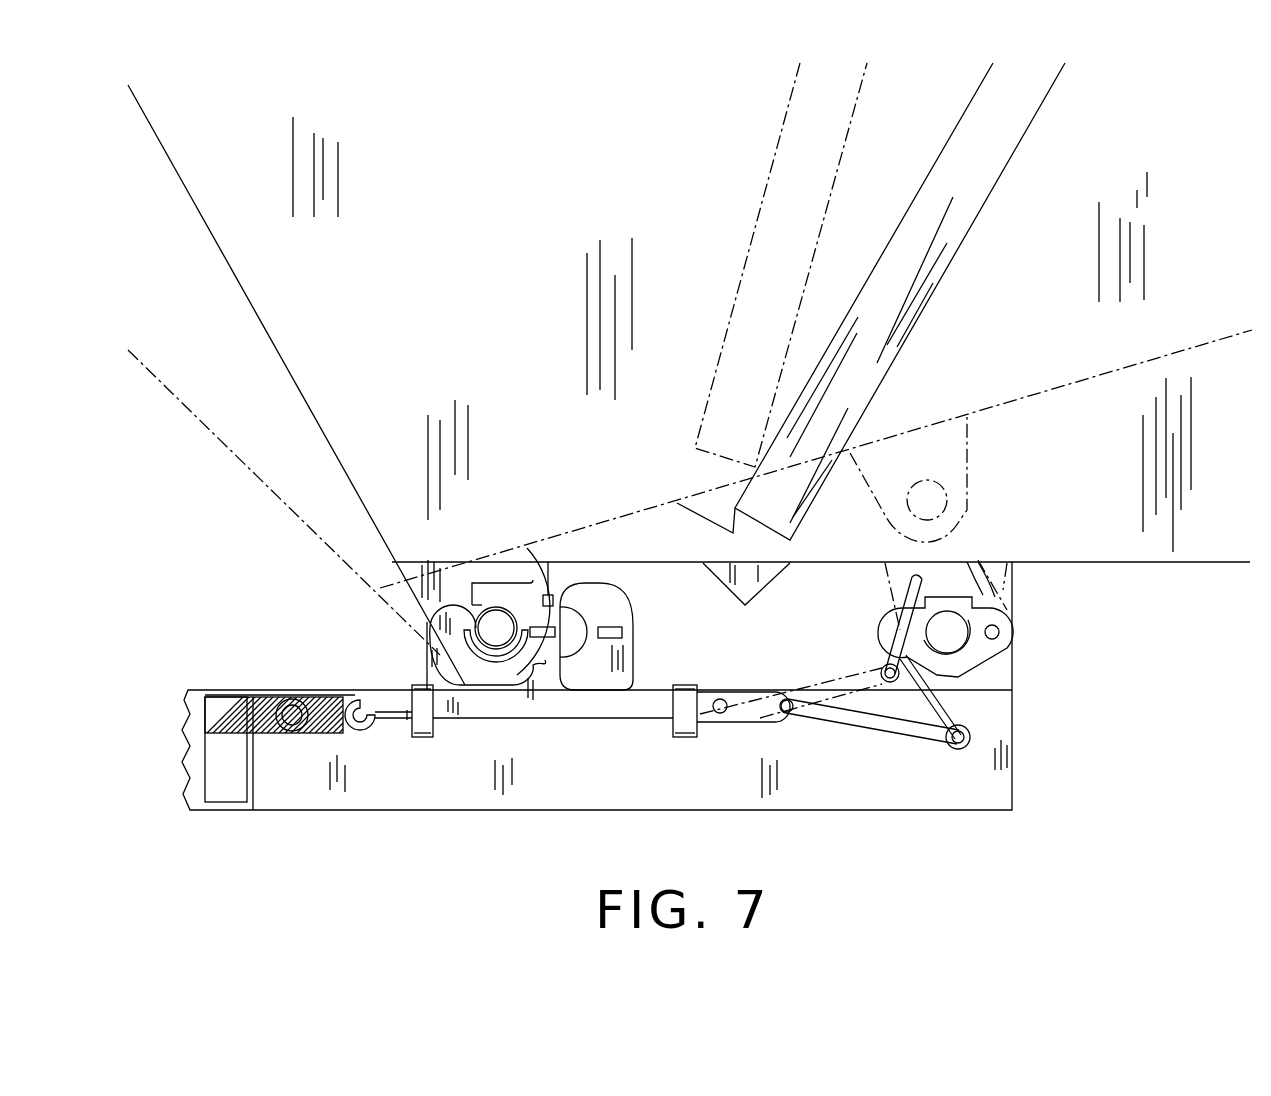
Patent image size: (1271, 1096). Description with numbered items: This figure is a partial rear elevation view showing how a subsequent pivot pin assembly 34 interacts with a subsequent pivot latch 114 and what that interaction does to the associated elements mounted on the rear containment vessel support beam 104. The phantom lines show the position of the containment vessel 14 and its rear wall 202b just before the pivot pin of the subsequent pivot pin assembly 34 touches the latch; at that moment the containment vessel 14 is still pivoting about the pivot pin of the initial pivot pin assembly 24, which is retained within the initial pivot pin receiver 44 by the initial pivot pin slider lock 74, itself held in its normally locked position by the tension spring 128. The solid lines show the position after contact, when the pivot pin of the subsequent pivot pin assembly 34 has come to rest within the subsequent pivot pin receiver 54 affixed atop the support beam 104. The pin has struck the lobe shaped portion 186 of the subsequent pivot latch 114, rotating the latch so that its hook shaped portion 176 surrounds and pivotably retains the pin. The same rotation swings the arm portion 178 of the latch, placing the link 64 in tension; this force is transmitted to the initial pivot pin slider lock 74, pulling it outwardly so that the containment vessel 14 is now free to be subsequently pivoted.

The containment vessel 14 is at (967, 343).
The rear wall 202b is at (974, 479).
The hook shaped portion 176 is at (943, 597).
The initial pivot pin receiver 44 is at (409, 624).
The initial pivot pin assembly 24 is at (573, 572).
The subsequent pivot pin assembly 34 is at (860, 588).
The lobe shaped portion 186 is at (903, 657).
The subsequent pivot pin receiver 54 is at (1032, 599).
The subsequent pivot latch 114 is at (1003, 631).
The arm portion 178 is at (957, 713).
The link 64 is at (925, 734).
The initial pivot pin slider lock 74 is at (560, 705).
The rear containment vessel support beam 104 is at (668, 800).
The tension spring 128 is at (268, 697).